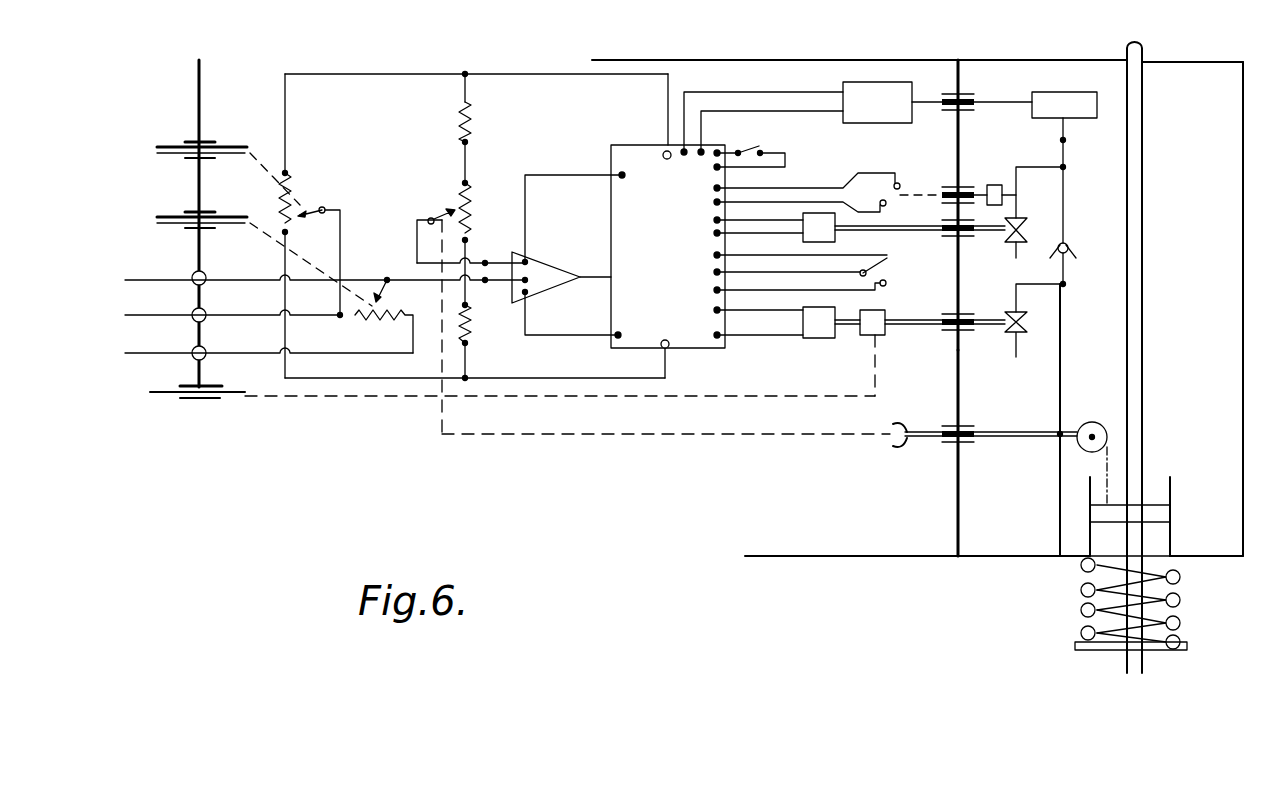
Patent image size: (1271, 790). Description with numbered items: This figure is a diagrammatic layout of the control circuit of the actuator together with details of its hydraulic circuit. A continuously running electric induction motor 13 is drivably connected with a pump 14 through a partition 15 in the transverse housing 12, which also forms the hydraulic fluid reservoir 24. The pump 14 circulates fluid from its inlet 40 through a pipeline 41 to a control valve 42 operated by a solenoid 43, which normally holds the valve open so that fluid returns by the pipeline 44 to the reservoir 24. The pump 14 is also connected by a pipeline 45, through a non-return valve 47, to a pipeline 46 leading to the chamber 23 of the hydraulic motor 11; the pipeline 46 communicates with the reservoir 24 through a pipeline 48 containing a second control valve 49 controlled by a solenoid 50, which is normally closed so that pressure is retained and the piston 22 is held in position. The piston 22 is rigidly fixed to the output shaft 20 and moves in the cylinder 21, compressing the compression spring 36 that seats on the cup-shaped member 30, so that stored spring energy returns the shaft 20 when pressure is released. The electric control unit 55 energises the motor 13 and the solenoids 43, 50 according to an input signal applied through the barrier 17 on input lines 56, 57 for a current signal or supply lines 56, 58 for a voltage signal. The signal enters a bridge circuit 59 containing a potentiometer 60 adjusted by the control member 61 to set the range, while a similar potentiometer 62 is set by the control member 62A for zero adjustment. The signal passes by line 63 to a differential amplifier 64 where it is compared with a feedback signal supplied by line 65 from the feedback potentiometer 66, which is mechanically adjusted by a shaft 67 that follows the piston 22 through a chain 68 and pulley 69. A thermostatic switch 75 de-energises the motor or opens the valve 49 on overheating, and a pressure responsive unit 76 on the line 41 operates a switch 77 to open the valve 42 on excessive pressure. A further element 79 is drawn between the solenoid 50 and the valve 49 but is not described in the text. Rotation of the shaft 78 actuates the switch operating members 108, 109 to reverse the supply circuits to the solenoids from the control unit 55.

The hydraulic servo-unit or motor 11 is at (1174, 530).
The transverse housing 12 is at (958, 62).
The electric induction motor 13 is at (882, 80).
The pump 14 is at (1088, 92).
The partition 15 is at (958, 402).
The barrier 17 is at (199, 78).
The shaft 20 is at (1144, 126).
The cylinder 21 is at (1172, 500).
The piston 22 is at (1155, 508).
The chamber 23 is at (1160, 545).
The hydraulic fluid reservoir 24 is at (1226, 82).
The annular cup-shaped member 30 is at (1078, 648).
The compression spring 36 is at (1080, 590).
The inlet 40 is at (1060, 90).
The pipeline 41 is at (1047, 160).
The control valve 42 is at (1040, 216).
The solenoid 43 is at (816, 212).
The pipeline 44 is at (1016, 255).
The pipeline 45 is at (1065, 212).
The pipeline 46 is at (1062, 345).
The non-return valve 47 is at (1068, 250).
The pipeline 48 is at (1060, 290).
The second control valve 49 is at (1005, 328).
The solenoid 50 is at (808, 330).
The electric control unit 55 is at (633, 150).
The input line 56 is at (160, 280).
The input line 57 is at (168, 300).
The supply line 58 is at (170, 338).
The bridge circuit 59 is at (408, 200).
The potentiometer 60 is at (383, 322).
The control member 61 is at (238, 218).
The potentiometer 62 is at (292, 175).
The control member 62A is at (232, 150).
The line 63 is at (478, 324).
The differential amplifier 64 is at (545, 305).
The line 65 is at (486, 262).
The feedback potentiometer 66 is at (432, 217).
The shaft 67 is at (1020, 432).
The chain 68 is at (1110, 485).
The pulley 69 is at (1095, 420).
The thermostatic switch 75 is at (760, 147).
The pressure responsive unit 76 is at (994, 185).
The switch 77 is at (885, 200).
The shaft 78 is at (228, 402).
The coupling 79 is at (880, 330).
The switch operating member 108 is at (888, 262).
The switch operating member 109 is at (886, 282).